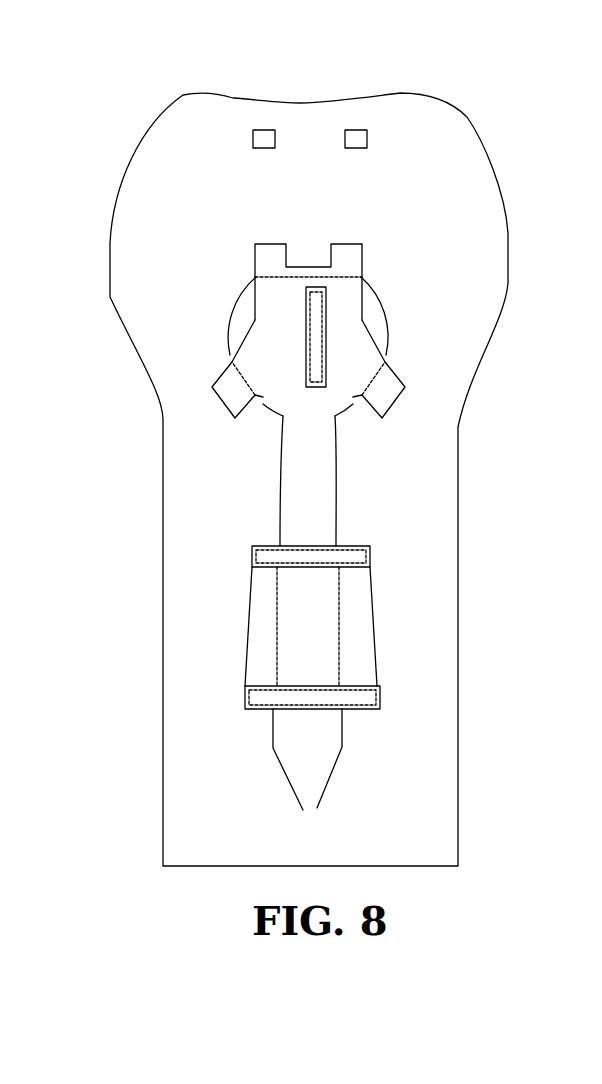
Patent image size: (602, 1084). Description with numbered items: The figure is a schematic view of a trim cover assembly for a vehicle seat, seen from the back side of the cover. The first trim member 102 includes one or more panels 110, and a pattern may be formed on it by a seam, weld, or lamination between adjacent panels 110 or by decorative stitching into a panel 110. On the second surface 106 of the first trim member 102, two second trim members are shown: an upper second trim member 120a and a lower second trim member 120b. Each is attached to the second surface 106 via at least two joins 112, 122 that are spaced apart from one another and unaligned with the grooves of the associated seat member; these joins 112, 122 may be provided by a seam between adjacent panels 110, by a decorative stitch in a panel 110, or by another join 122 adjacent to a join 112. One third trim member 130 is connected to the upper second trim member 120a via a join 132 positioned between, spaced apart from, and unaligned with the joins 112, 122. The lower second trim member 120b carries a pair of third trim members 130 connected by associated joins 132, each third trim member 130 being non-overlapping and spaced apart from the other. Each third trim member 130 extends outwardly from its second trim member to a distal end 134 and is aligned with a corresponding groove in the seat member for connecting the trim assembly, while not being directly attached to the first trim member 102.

The first trim member 102 is at (347, 474).
The second surface 106 is at (347, 474).
The panel 110 is at (442, 138).
The join 112 is at (318, 470).
The upper second trim member 120a is at (333, 295).
The lower second trim member 120b is at (355, 608).
The join 122 is at (318, 470).
The third trim member 130 is at (310, 470).
The join 132 is at (310, 470).
The distal end 134 is at (339, 470).